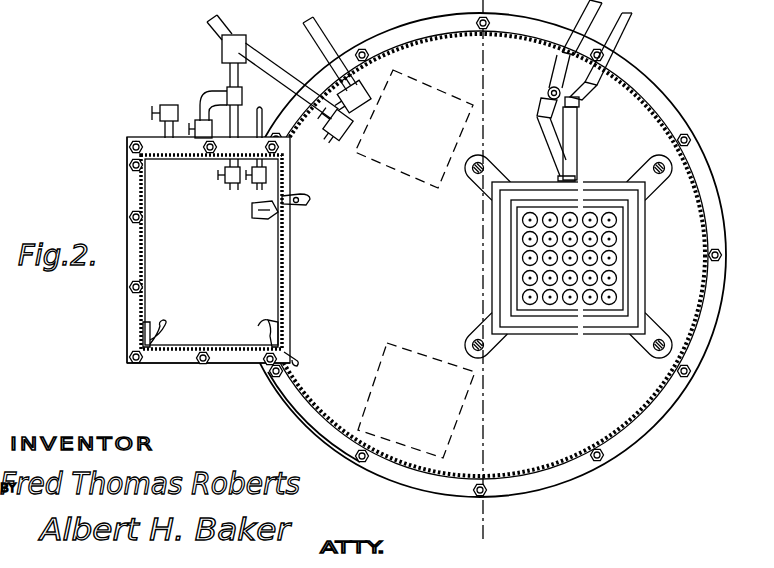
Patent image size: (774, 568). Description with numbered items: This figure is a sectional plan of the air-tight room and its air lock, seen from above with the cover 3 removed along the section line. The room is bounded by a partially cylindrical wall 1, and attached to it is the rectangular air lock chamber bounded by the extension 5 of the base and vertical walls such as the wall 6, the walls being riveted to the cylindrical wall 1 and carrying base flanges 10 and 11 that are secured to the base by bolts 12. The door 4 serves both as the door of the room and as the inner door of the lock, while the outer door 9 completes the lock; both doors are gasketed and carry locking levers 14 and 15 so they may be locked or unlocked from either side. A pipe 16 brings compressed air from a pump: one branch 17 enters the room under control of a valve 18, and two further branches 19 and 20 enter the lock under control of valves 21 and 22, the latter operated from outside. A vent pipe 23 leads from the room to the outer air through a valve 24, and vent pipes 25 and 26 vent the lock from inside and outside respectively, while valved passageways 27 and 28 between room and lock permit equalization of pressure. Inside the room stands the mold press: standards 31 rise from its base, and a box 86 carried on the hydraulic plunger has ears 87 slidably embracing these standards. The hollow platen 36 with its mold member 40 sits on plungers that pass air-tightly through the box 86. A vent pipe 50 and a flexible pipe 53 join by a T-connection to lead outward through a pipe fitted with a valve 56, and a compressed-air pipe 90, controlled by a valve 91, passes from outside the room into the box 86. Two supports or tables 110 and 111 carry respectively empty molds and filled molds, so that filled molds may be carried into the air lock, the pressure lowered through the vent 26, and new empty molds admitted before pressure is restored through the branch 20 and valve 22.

The partially cylindrical wall 1 is at (446, 35).
The cover 3 is at (466, 6).
The door 4 is at (287, 264).
The extension of the base 5 is at (211, 252).
The vertical wall 6 is at (222, 347).
The outer door 9 is at (143, 270).
The base flange 10 is at (300, 404).
The base flange 11 is at (160, 362).
The bolts 12 is at (490, 494).
The locking lever 14 is at (268, 322).
The locking lever 15 is at (166, 332).
The pipe 16 is at (216, 33).
The branch 17 is at (305, 94).
The valve 18 is at (333, 143).
The branch 19 is at (243, 96).
The branch 20 is at (218, 96).
The valve 21 is at (234, 186).
The valve 22 is at (211, 128).
The vent pipe 23 is at (325, 45).
The valve 24 is at (367, 88).
The vent pipe 25 is at (263, 126).
The vent pipe 26 is at (157, 108).
The valved passageway 27 is at (306, 205).
The valved passageway 28 is at (268, 219).
The standards 31 is at (484, 350).
The hollow platen 36 is at (626, 260).
The mold member 40 is at (617, 287).
The vent pipe 50 is at (548, 93).
The flexible pipe 53 is at (553, 150).
The valve 56 is at (567, 63).
The box 86 is at (492, 242).
The ears 87 is at (484, 324).
The pipe 90 is at (580, 152).
The valve 91 is at (590, 96).
The support or table 110 is at (462, 106).
The support or table 111 is at (416, 400).